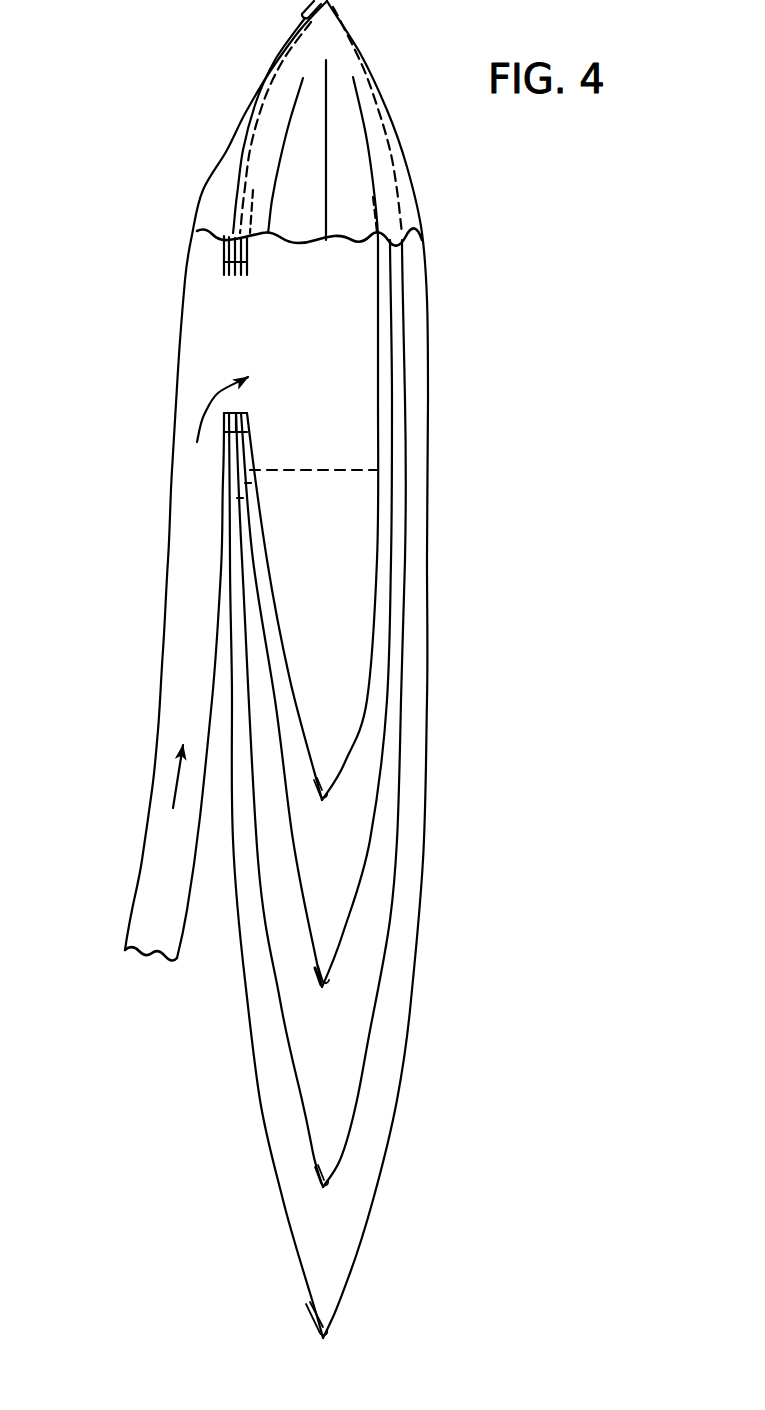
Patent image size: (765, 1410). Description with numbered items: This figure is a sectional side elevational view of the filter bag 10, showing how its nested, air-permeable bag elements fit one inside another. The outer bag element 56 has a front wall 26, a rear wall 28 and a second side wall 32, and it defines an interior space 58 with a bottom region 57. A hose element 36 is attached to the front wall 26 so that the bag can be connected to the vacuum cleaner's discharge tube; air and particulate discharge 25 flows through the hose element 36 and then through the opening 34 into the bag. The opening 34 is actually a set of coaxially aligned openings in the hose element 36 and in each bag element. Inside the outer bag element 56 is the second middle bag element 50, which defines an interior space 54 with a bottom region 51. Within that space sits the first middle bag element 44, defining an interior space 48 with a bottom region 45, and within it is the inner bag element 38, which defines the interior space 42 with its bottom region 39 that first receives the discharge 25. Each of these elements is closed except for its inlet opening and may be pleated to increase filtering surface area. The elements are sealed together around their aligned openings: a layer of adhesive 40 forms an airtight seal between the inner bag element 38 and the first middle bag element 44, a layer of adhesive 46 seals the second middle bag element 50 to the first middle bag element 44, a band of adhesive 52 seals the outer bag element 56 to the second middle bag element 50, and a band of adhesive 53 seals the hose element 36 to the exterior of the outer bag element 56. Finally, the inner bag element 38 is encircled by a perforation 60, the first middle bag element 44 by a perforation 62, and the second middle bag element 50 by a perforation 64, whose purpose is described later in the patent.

The filter bag 10 is at (427, 178).
The discharge 25 is at (178, 788).
The front wall 26 is at (242, 983).
The rear wall 28 is at (430, 712).
The second side wall 32 is at (353, 143).
The opening 34 is at (232, 339).
The hose element 36 is at (138, 873).
The inner bag element 38 is at (385, 573).
The bottom region 39 is at (332, 762).
The layer of adhesive 40 is at (243, 258).
The interior space 42 is at (309, 628).
The first middle bag element 44 is at (393, 657).
The bottom region 45 is at (332, 950).
The layer of adhesive 46 is at (248, 420).
The interior space 48 is at (314, 863).
The second middle bag element 50 is at (403, 752).
The bottom region 51 is at (330, 1148).
The band of adhesive 52 is at (223, 262).
The band of adhesive 53 is at (223, 262).
The interior space 54 is at (307, 1049).
The outer bag element 56 is at (405, 1047).
The bottom region 57 is at (327, 1302).
The interior space 58 is at (314, 1239).
The perforation 60 is at (310, 473).
The perforation 62 is at (383, 482).
The perforation 64 is at (397, 497).